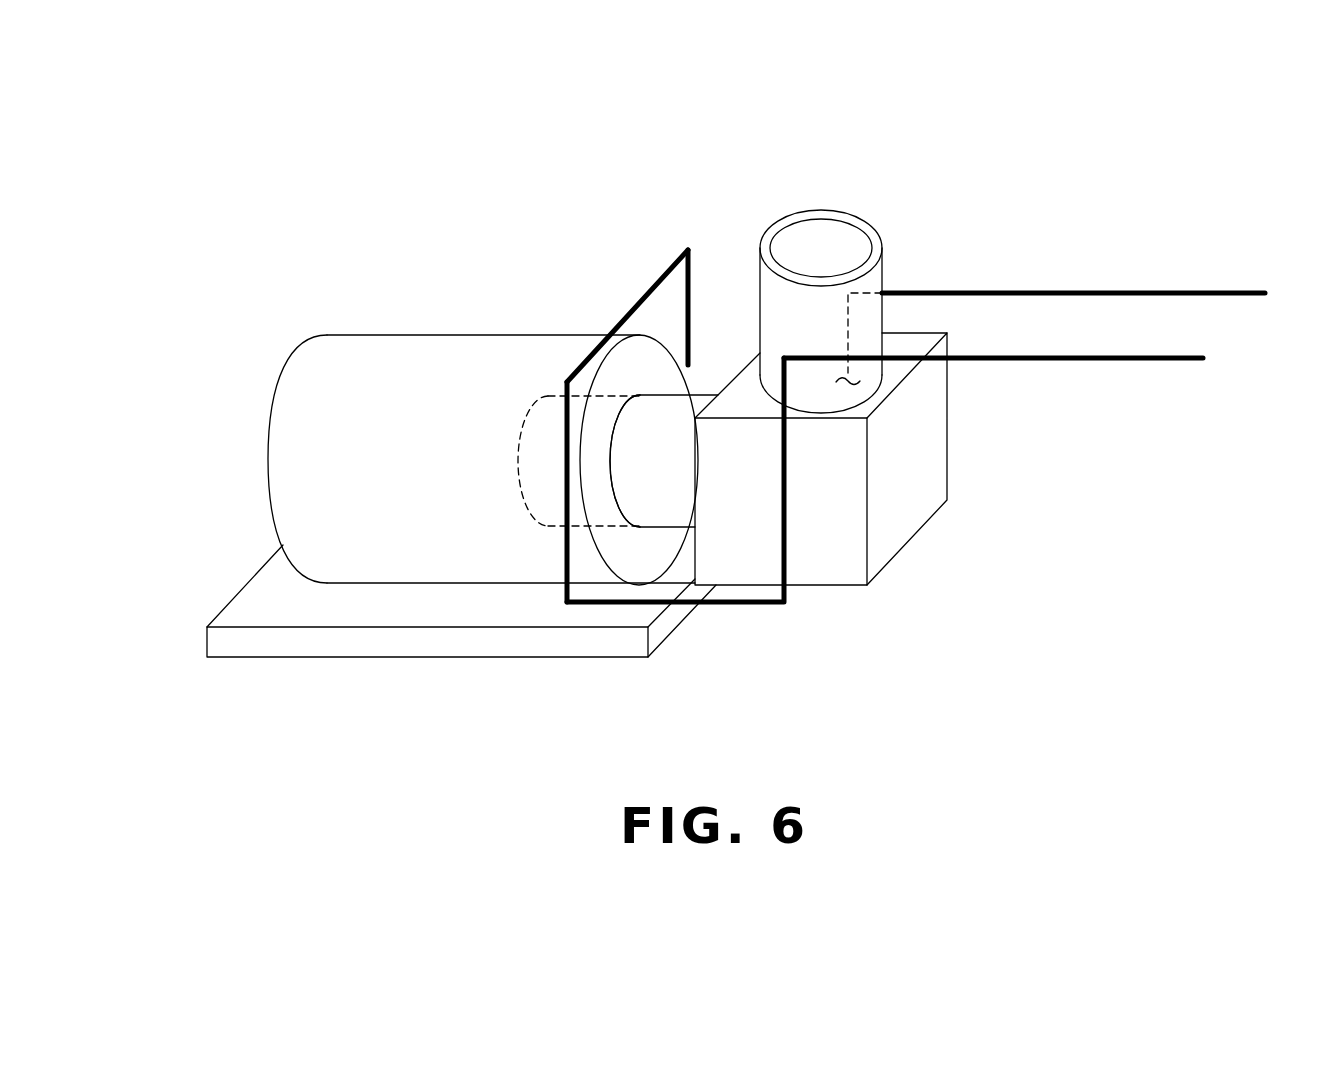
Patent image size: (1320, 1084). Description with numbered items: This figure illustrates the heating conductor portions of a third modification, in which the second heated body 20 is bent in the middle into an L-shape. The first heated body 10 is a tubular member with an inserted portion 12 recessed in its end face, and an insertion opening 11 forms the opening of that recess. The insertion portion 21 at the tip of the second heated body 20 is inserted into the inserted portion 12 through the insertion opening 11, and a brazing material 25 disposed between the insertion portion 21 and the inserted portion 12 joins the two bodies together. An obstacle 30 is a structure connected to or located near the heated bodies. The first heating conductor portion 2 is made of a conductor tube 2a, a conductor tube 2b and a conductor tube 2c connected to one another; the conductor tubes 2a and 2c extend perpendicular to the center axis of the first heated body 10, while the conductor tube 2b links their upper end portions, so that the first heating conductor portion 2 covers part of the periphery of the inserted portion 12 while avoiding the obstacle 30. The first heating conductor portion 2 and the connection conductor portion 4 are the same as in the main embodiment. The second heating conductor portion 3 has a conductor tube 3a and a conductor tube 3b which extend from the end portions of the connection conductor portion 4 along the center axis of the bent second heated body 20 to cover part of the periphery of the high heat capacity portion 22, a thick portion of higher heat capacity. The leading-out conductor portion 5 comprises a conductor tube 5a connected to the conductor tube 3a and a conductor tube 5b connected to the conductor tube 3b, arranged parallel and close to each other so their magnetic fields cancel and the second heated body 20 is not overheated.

The first heating conductor portion 2 is at (615, 404).
The conductor tube 2a is at (567, 555).
The conductor tube 2b is at (660, 281).
The conductor tube 2c is at (720, 295).
The second heating conductor portion 3 is at (832, 404).
The conductor tube 3a is at (783, 458).
The conductor tube 3b is at (848, 322).
The connection conductor portion 4 is at (733, 604).
The leading-out conductor portion 5 is at (1024, 318).
The conductor tube 5a is at (1128, 360).
The conductor tube 5b is at (1165, 293).
The first heated body 10 is at (268, 448).
The insertion opening 11 is at (613, 447).
The inserted portion 12 is at (513, 462).
The second heated body 20 is at (823, 208).
The insertion portion 21 is at (607, 410).
The high heat capacity portion 22 is at (915, 470).
The brazing material 25 is at (625, 461).
The obstacle 30 is at (512, 648).